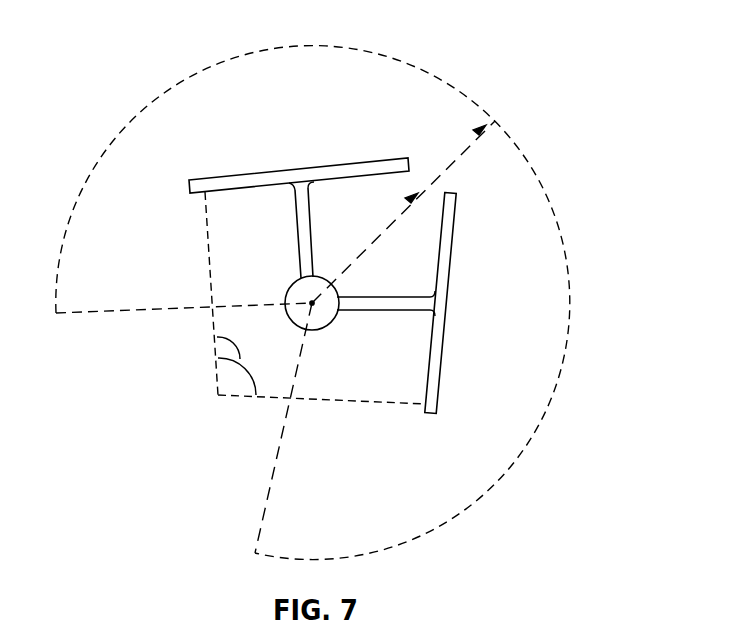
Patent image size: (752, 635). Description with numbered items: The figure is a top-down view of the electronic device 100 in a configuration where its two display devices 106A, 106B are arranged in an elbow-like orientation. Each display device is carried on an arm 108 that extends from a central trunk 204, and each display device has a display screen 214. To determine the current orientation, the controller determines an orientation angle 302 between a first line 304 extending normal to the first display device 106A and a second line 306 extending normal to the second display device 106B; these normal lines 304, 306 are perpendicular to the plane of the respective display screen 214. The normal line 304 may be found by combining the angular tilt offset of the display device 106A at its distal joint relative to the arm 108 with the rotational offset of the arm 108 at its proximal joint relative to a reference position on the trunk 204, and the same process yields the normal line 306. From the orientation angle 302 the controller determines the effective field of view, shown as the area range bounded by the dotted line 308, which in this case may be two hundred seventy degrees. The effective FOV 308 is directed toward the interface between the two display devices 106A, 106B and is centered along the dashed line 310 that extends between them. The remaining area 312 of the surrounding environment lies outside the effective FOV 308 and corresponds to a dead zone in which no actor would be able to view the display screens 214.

The electronic device 100 is at (324, 235).
The first display device 106A is at (453, 247).
The second display device 106B is at (348, 162).
The arm 108 is at (391, 305).
The trunk 204 is at (298, 287).
The display screen 214 is at (368, 255).
The orientation angle 302 is at (272, 333).
The first line 304 is at (365, 405).
The second line 306 is at (209, 272).
The dotted line 308 is at (558, 373).
The dashed line 310 is at (468, 145).
The area 312 is at (190, 403).